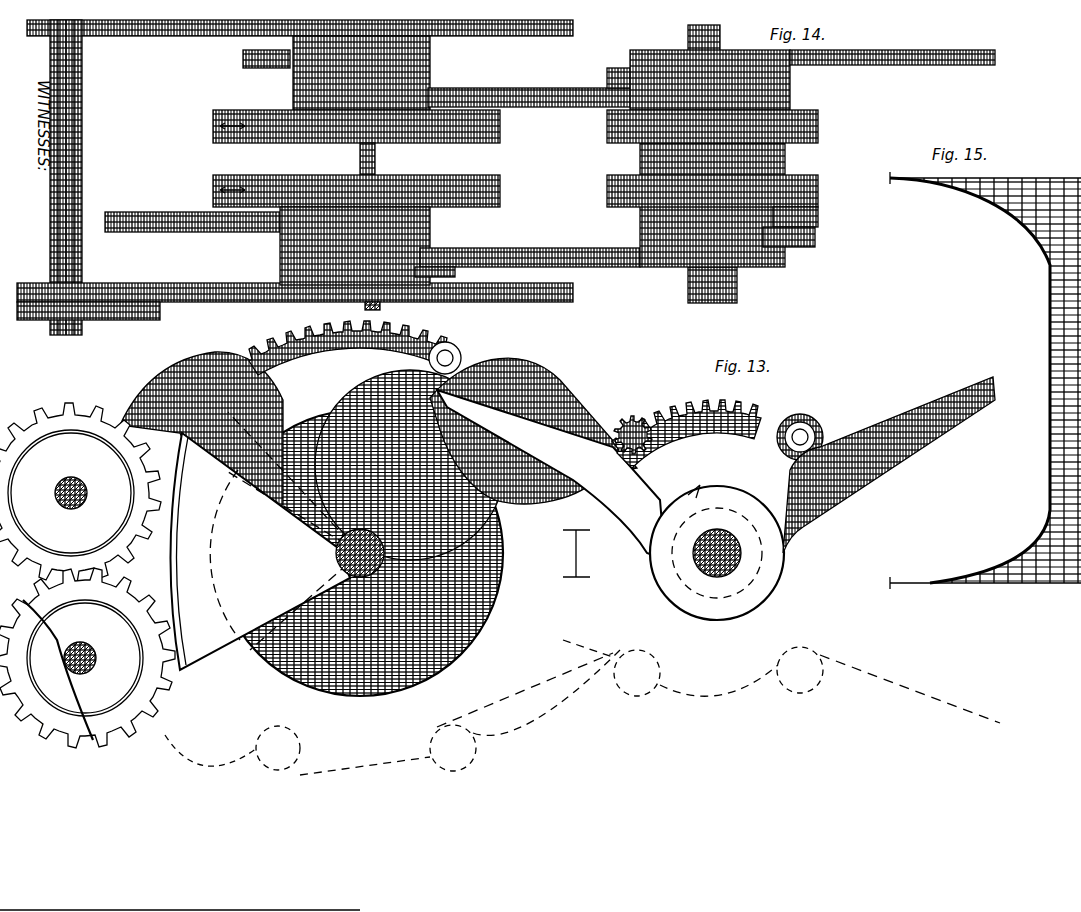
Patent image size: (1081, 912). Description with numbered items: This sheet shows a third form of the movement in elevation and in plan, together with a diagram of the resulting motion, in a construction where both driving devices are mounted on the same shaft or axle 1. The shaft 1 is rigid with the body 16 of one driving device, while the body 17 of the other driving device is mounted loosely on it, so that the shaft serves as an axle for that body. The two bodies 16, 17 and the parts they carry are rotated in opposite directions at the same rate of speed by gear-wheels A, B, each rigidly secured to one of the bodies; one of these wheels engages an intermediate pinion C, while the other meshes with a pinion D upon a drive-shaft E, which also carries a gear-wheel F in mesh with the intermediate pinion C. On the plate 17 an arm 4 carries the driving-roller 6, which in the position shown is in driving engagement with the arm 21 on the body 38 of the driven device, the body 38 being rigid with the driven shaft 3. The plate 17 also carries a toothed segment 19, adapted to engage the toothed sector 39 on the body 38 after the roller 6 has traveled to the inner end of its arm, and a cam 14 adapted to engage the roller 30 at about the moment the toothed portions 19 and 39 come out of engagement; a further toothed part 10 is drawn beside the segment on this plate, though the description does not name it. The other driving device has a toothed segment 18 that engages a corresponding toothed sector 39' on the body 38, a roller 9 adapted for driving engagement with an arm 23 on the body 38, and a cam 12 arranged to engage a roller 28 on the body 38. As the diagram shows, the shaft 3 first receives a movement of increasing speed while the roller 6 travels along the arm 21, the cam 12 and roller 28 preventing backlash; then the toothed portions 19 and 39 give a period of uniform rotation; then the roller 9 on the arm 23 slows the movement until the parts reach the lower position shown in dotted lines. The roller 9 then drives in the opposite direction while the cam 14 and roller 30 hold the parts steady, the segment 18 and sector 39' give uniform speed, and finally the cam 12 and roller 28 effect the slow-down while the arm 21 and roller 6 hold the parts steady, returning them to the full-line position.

In FIG. 14, the shaft or axle 1 is at (383, 310).
In FIG. 13, the shaft or axle 1 is at (338, 570).
In FIG. 14, the driven shaft 3 is at (737, 280).
In FIG. 13, the driven shaft 3 is at (742, 558).
In FIG. 13, the arm 4 is at (330, 385).
In FIG. 14, the driving-roller 6 is at (442, 248).
In FIG. 13, the driving-roller 6 is at (458, 348).
In FIG. 14, the roller 9 is at (243, 58).
In FIG. 13, the roller 9 is at (258, 345).
In FIG. 13, the toothed sector 10 is at (316, 334).
In FIG. 14, the cam 12 is at (498, 88).
In FIG. 13, the cam 12 is at (565, 380).
In FIG. 14, the cam 14 is at (165, 232).
In FIG. 13, the cam 14 is at (178, 372).
In FIG. 14, the body of one driving device 16 is at (300, 85).
In FIG. 14, the body or plate of the other driving device 17 is at (280, 251).
In FIG. 13, the body or plate of the other driving device 17 is at (470, 612).
In FIG. 14, the toothed segment 18 is at (500, 125).
In FIG. 14, the toothed segment 19 is at (500, 192).
In FIG. 13, the toothed segment 19 is at (362, 335).
In FIG. 14, the arm 21 is at (598, 267).
In FIG. 13, the arm 21 is at (905, 690).
In FIG. 14, the arm 23 is at (930, 65).
In FIG. 13, the arm 23 is at (892, 412).
In FIG. 14, the roller 28 is at (607, 90).
In FIG. 13, the roller 28 is at (632, 416).
In FIG. 14, the roller 30 is at (818, 217).
In FIG. 13, the roller 30 is at (815, 423).
In FIG. 14, the body of the driven device 38 is at (640, 223).
In FIG. 13, the body of the driven device 38 is at (768, 595).
In FIG. 14, the toothed sector 39 is at (726, 191).
In FIG. 13, the toothed sector 39 is at (686, 423).
In FIG. 14, the toothed sector 39' is at (731, 126).
In FIG. 14, the gear-wheel A is at (208, 285).
In FIG. 13, the gear-wheel A is at (265, 541).
In FIG. 14, the gear-wheel B is at (202, 37).
In FIG. 14, the intermediate pinion C is at (105, 285).
In FIG. 13, the intermediate pinion C is at (80, 493).
In FIG. 14, the pinion D is at (128, 37).
In FIG. 13, the drive-shaft E is at (130, 656).
In FIG. 13, the gear-wheel F is at (87, 658).